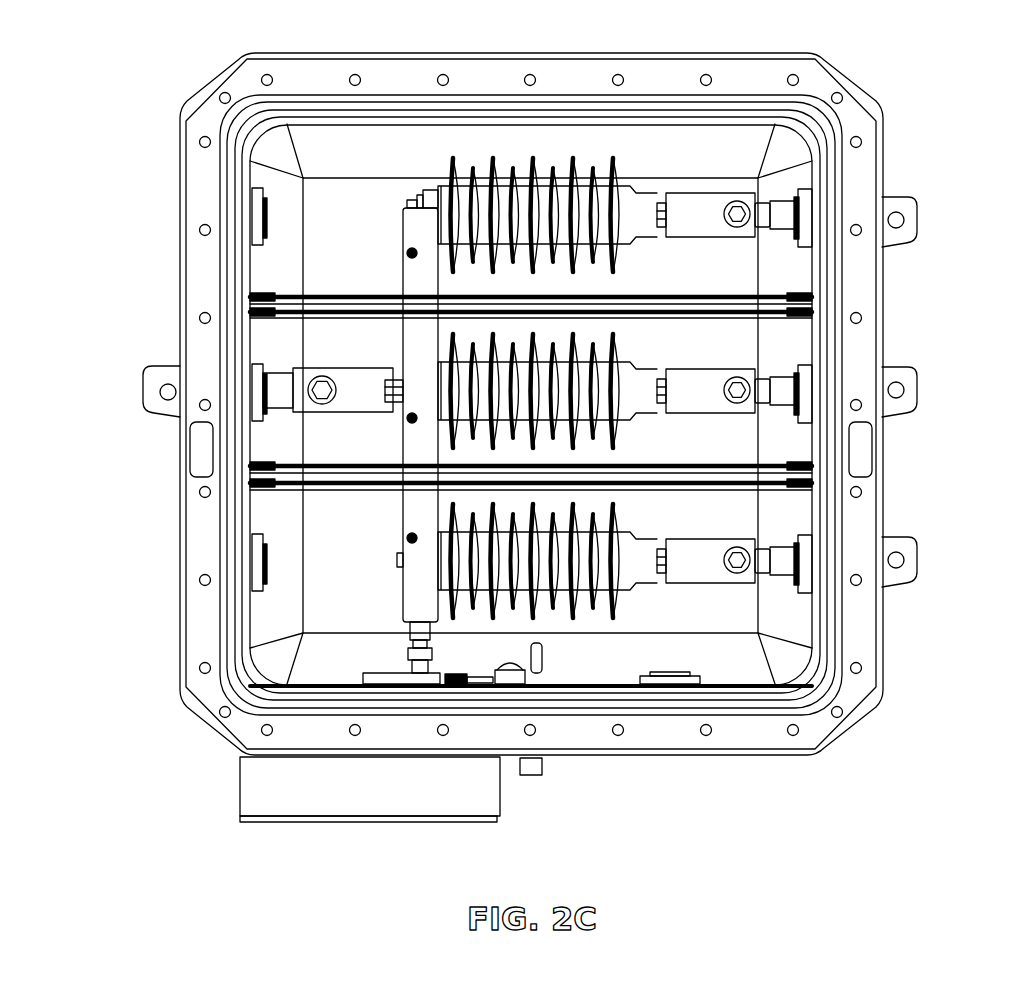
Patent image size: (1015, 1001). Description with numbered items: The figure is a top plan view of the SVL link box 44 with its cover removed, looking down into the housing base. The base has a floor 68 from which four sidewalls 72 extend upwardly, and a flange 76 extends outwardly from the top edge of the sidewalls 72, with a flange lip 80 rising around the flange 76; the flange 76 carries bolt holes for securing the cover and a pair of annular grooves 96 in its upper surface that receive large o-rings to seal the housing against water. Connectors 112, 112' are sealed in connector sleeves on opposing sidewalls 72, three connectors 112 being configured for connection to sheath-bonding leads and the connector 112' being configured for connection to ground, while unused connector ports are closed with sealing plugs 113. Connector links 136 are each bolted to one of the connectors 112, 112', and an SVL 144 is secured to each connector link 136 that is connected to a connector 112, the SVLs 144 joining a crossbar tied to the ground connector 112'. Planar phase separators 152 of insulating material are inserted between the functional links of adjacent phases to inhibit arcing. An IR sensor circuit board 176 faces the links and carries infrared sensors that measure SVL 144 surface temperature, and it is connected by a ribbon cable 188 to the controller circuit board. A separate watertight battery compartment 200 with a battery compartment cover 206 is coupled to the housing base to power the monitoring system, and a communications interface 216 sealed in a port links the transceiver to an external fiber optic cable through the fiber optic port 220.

The SVL link box 44 is at (100, 127).
The floor 68 is at (340, 590).
The sidewalls 72 is at (722, 137).
The flange 76 is at (863, 645).
The flange lip 80 is at (878, 697).
The annular grooves 96 is at (843, 122).
The connectors 112 is at (938, 392).
The connector 112' is at (112, 391).
The sealing plugs 113 is at (263, 213).
The connector links 136 is at (690, 212).
The SVL 144 is at (507, 193).
The phase separator 152 is at (795, 320).
The IR sensor circuit board 176 is at (417, 503).
The ribbon cable 188 is at (417, 643).
The battery compartment 200 is at (240, 802).
The battery compartment cover 206 is at (265, 825).
The communications interface 216 is at (540, 675).
The fiber optic port 220 is at (543, 772).